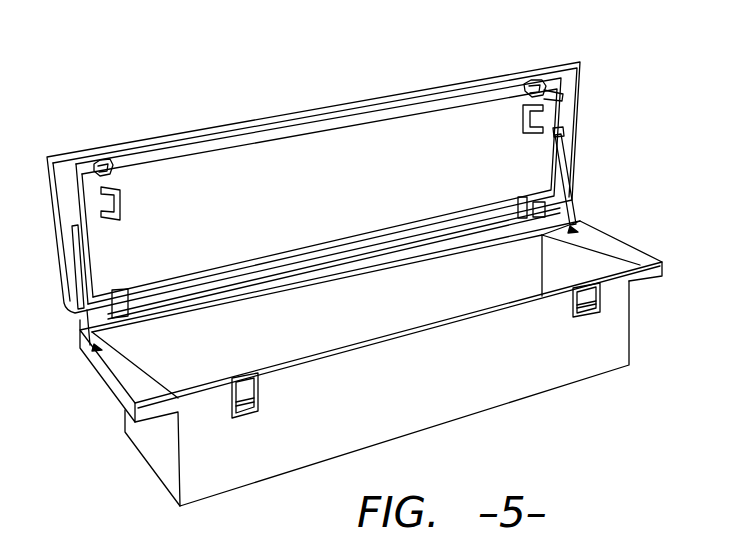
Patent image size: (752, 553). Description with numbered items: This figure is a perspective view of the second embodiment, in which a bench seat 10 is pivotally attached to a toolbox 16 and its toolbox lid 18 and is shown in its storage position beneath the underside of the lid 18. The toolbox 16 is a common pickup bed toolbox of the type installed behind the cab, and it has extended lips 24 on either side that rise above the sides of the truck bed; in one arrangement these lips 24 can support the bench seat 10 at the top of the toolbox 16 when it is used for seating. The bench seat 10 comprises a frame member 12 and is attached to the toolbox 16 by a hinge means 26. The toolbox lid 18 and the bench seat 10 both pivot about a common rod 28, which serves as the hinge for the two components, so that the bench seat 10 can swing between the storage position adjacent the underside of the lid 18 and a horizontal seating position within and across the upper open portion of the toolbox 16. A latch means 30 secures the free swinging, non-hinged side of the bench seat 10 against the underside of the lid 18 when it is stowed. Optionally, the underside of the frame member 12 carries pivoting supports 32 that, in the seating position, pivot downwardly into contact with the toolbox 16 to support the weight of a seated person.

The bench seat 10 is at (365, 261).
The frame member 12 is at (338, 165).
The toolbox 16 is at (380, 362).
The toolbox lid 18 is at (322, 127).
The extended lips 24 is at (619, 263).
The hinge means 26 is at (523, 193).
The common rod 28 is at (417, 245).
The latch means 30 is at (110, 160).
The pivoting supports 32 is at (122, 202).